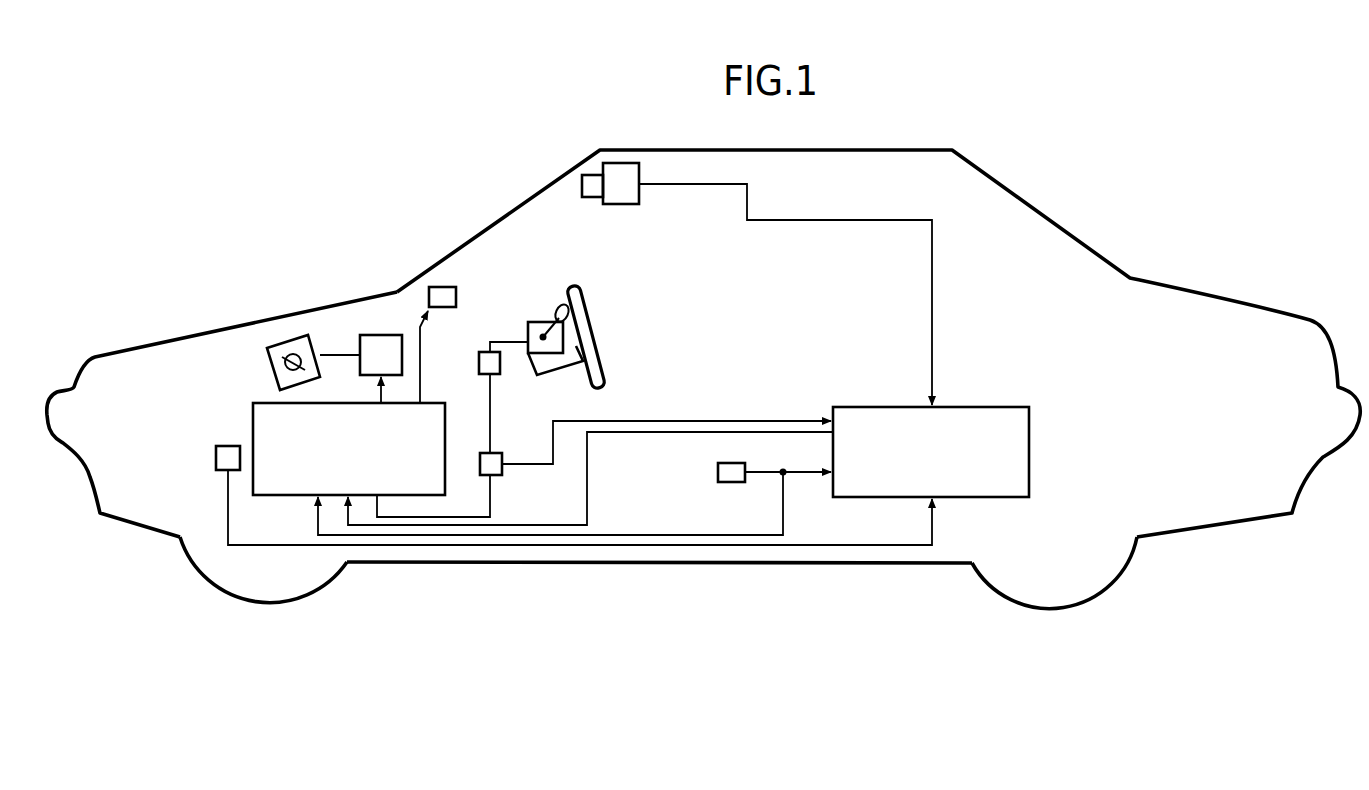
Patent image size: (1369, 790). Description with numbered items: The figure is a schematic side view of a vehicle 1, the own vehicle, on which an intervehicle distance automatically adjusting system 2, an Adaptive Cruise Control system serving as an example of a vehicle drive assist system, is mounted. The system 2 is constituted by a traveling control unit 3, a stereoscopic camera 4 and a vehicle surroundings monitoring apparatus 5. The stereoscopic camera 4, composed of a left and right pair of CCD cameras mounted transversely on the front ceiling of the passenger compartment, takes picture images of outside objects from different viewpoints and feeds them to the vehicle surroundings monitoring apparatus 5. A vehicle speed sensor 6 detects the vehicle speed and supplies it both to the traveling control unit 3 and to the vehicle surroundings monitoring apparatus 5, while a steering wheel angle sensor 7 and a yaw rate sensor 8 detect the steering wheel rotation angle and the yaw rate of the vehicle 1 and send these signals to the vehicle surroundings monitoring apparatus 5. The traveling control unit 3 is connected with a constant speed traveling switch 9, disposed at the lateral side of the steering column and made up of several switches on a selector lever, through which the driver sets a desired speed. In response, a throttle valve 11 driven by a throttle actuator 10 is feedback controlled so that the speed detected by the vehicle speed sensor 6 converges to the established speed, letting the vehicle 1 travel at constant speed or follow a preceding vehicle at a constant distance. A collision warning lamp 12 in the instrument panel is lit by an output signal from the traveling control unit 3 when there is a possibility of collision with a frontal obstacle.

The vehicle 1 is at (1033, 208).
The intervehicle distance automatically adjusting system 2 is at (892, 199).
The traveling control unit 3 is at (287, 495).
The stereoscopic camera 4 is at (619, 163).
The vehicle surroundings monitoring apparatus 5 is at (967, 498).
The vehicle speed sensor 6 is at (718, 472).
The steering wheel angle sensor 7 is at (495, 453).
The yaw rate sensor 8 is at (216, 458).
The constant speed traveling switch 9 is at (533, 322).
The throttle actuator 10 is at (370, 335).
The throttle valve 11 is at (290, 340).
The collision warning lamp 12 is at (440, 287).